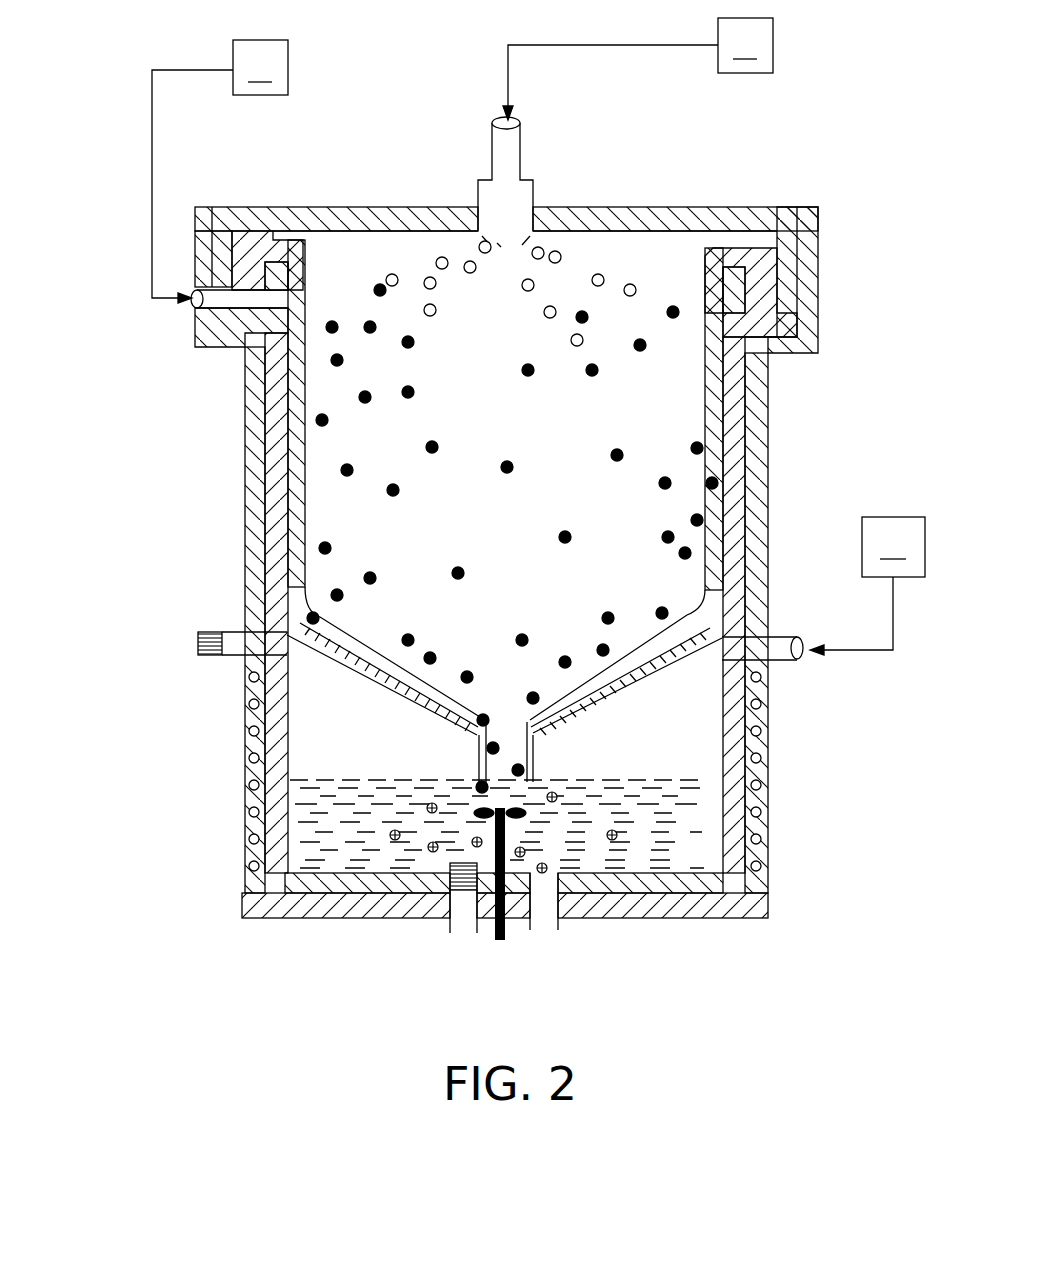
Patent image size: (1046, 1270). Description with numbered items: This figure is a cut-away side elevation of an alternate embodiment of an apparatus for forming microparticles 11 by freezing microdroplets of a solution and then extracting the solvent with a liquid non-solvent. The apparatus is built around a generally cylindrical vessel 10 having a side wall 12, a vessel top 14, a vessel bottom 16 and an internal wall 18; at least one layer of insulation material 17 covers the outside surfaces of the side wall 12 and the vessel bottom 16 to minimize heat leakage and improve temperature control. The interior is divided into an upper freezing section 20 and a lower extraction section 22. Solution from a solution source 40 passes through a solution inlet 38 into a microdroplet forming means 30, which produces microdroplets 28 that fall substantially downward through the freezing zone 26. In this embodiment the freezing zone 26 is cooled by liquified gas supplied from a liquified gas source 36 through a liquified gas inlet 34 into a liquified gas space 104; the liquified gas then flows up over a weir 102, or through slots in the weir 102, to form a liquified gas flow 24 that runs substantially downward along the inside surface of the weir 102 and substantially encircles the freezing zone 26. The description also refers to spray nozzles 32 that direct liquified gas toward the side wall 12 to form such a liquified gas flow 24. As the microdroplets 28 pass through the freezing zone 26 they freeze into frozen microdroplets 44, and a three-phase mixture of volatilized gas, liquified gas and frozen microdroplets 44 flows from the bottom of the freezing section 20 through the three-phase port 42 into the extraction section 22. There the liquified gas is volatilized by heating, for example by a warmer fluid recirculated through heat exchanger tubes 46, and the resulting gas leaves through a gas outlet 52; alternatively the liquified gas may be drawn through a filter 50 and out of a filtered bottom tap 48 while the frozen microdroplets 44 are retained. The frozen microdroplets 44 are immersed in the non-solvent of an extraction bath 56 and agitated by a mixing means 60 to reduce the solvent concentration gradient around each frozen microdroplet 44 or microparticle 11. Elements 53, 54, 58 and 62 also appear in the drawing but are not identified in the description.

The vessel 10 is at (203, 238).
The microparticles 11 is at (396, 840).
The side wall 12 is at (278, 496).
The vessel top 14 is at (620, 211).
The vessel bottom 16 is at (630, 896).
The insulation material 17 is at (250, 453).
The internal wall 18 is at (388, 682).
The freezing section 20 is at (718, 490).
The extraction section 22 is at (315, 740).
The liquified gas flow 24 is at (297, 566).
The freezing zone 26 is at (555, 351).
The microdroplets 28 is at (388, 272).
The microdroplet forming means 30 is at (478, 187).
The spray nozzles 32 is at (232, 330).
The liquified gas inlet 34 is at (192, 305).
The liquified gas source 36 is at (220, 171).
The solution inlet 38 is at (502, 124).
The solution source 40 is at (638, 69).
The three-phase port 42 is at (546, 728).
The frozen microdroplets 44 is at (388, 492).
The heat exchanger tubes 46 is at (255, 849).
The filtered bottom tap 48 is at (465, 927).
The filter 50 is at (453, 866).
The gas outlet 52 is at (245, 652).
The screen 53 is at (205, 632).
The liquid inlet pipe 54 is at (800, 662).
The extraction bath 56 is at (752, 922).
The liquid source 58 is at (867, 586).
The mixing means 60 is at (500, 950).
The bottom outlet 62 is at (545, 914).
The weir 102 is at (274, 258).
The liquified gas space 104 is at (236, 262).